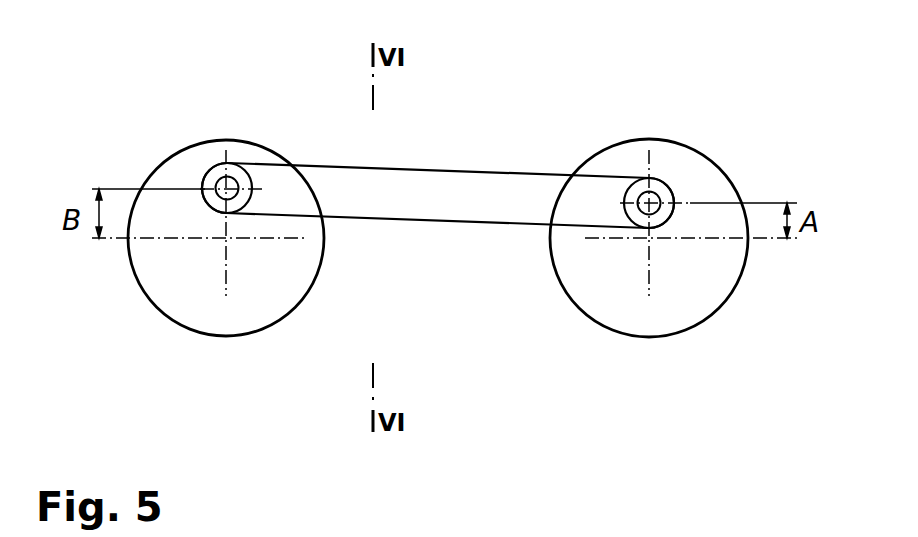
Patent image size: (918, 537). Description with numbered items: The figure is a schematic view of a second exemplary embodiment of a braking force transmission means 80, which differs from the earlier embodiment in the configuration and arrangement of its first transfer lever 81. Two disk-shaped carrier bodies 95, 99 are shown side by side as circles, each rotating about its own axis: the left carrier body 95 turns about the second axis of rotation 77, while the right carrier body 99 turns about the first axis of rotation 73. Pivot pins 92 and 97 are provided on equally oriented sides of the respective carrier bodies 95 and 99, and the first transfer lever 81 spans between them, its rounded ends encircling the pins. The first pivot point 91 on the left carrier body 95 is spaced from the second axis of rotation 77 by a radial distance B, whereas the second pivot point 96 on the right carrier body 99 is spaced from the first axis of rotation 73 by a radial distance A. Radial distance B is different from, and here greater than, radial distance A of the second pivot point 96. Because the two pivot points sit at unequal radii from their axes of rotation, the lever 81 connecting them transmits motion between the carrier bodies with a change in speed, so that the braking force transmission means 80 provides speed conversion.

The braking force transmission means 80 is at (527, 115).
The first transfer lever 81 is at (432, 186).
The first pivot point 91 is at (208, 165).
The pivot pin 92 is at (228, 183).
The disk-shaped carrier body 95 is at (272, 302).
The second axis of rotation 77 is at (226, 240).
The second pivot point 96 is at (663, 179).
The pivot pin 97 is at (647, 198).
The disk-shaped carrier body 99 is at (590, 290).
The first axis of rotation 73 is at (650, 240).